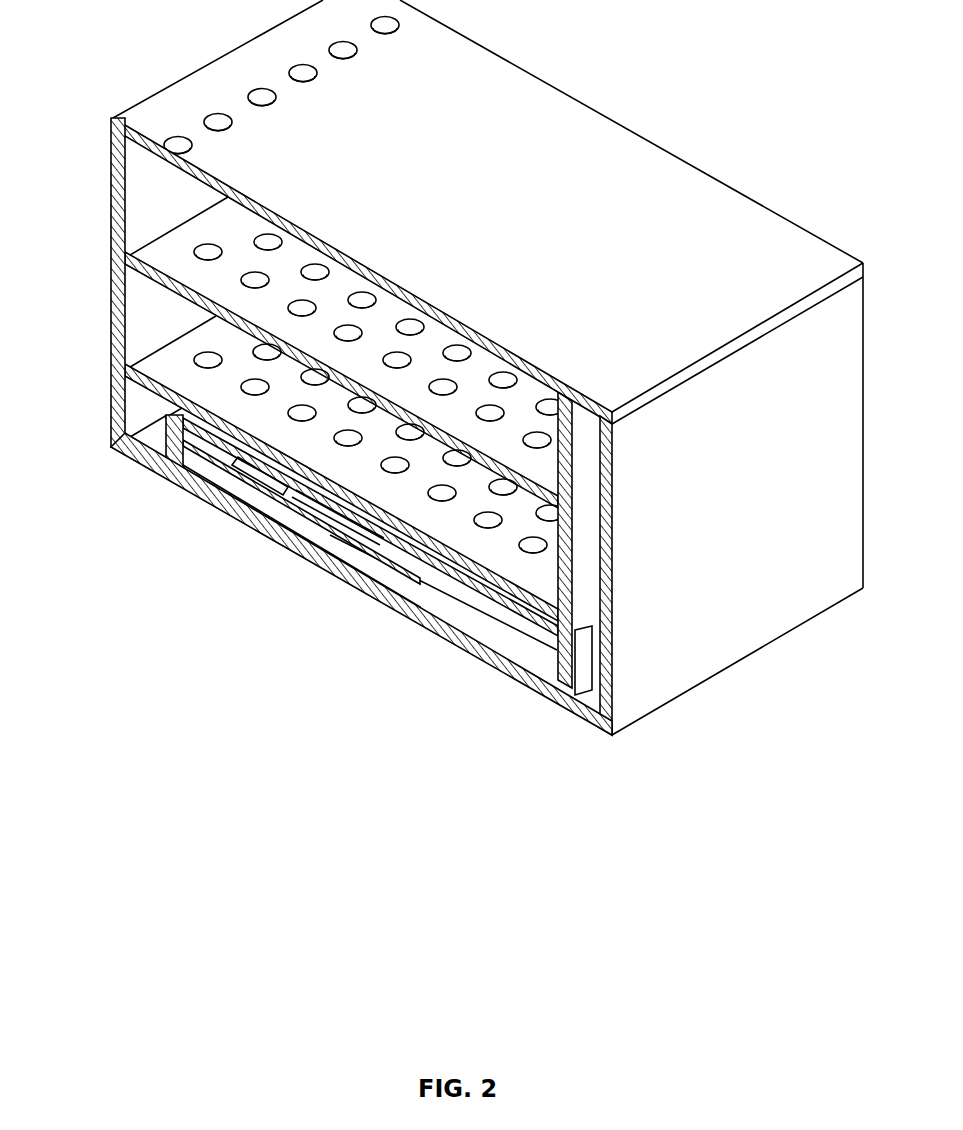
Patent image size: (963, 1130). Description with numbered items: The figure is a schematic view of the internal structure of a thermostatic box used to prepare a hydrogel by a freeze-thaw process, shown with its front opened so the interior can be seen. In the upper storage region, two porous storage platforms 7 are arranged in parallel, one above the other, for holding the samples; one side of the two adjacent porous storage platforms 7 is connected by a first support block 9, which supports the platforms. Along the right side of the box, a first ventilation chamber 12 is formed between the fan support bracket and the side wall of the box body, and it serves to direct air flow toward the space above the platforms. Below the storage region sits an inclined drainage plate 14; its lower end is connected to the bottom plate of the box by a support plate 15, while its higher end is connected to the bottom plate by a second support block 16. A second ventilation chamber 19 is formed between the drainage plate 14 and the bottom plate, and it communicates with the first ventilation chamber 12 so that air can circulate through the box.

The porous storage platform 7 is at (298, 304).
The first support block 9 is at (298, 410).
The first ventilation chamber 12 is at (464, 540).
The drainage plate 14 is at (288, 524).
The support plate 15 is at (100, 386).
The second support block 16 is at (519, 681).
The second ventilation chamber 19 is at (331, 529).